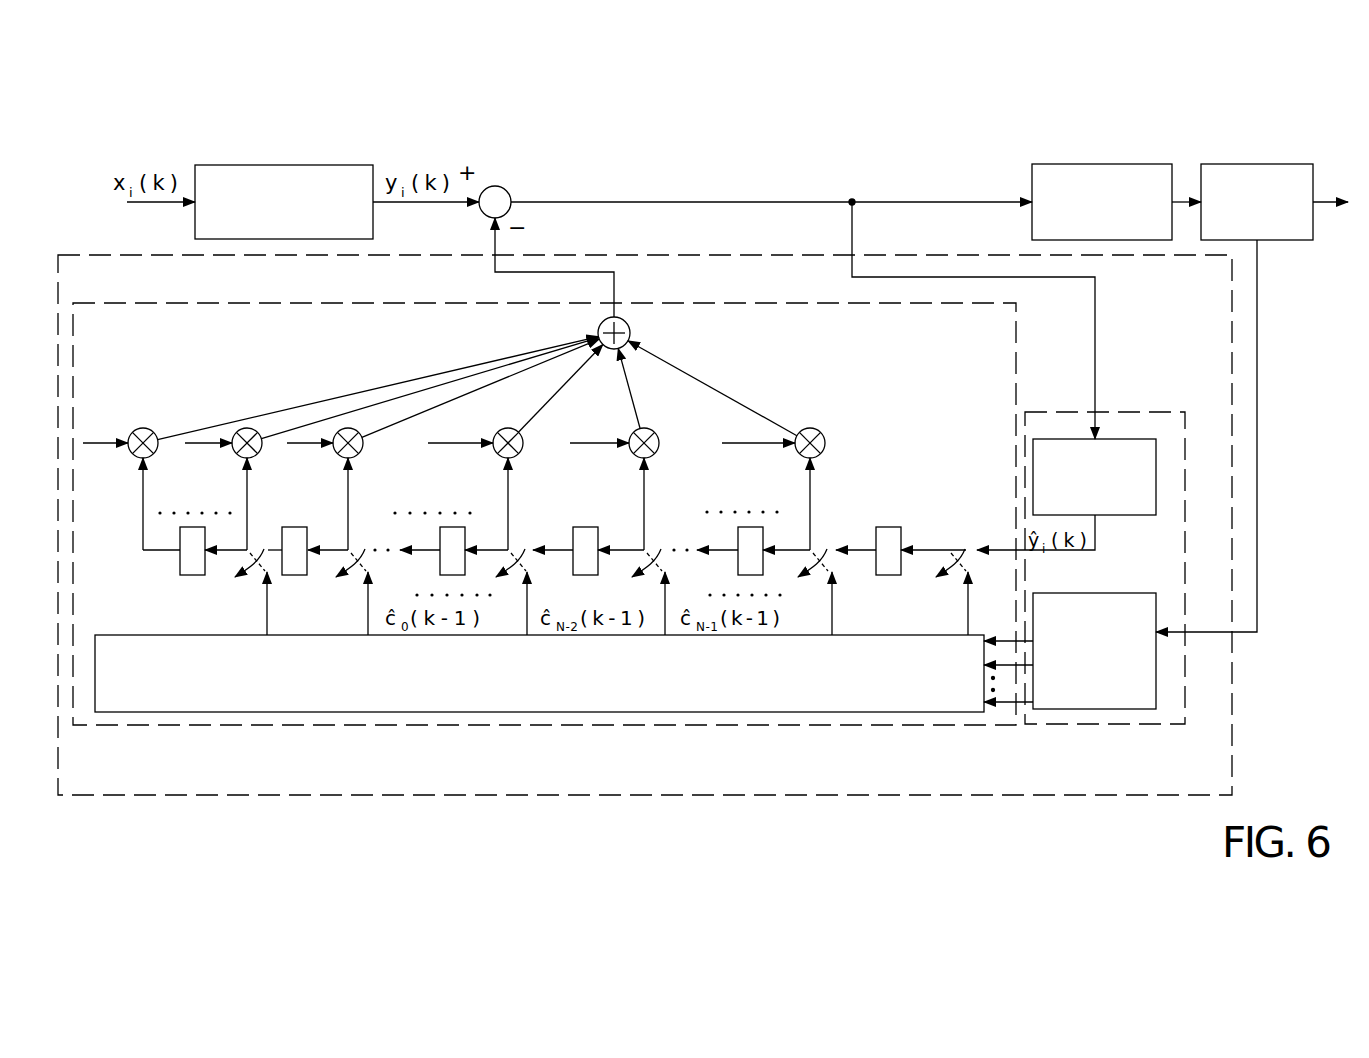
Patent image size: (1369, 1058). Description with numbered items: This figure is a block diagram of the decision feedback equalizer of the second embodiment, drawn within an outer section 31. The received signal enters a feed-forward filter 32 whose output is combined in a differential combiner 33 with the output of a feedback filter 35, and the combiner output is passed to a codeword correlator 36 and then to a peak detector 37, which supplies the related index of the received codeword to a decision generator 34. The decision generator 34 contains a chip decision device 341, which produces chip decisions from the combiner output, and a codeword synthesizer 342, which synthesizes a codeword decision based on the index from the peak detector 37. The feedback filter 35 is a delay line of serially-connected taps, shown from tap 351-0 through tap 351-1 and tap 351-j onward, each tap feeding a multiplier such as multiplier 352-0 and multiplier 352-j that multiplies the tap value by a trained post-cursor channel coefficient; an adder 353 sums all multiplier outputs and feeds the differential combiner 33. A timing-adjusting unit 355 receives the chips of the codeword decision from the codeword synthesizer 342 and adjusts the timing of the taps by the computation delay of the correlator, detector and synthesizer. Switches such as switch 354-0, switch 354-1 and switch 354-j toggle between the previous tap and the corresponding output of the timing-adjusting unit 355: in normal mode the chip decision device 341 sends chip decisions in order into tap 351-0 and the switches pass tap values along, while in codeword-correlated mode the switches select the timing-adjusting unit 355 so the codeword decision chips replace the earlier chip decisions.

The decision feedback equalizer / feedback section 31 is at (1233, 742).
The feed-forward filter 32 is at (246, 164).
The differential combiner 33 is at (498, 186).
The decision generator 34 is at (1122, 727).
The feedback filter 35 is at (1007, 727).
The codeword correlator 36 is at (1143, 163).
The peak detector 37 is at (1270, 163).
The chip decision device 341 is at (1143, 438).
The codeword synthesizer 342 is at (1135, 592).
The adder 353 is at (630, 326).
The timing-adjusting unit 355 is at (539, 673).
The multiplier 352-j is at (500, 430).
The multiplier 352-0 is at (818, 428).
The tap 351-j is at (573, 534).
The tap 351-1 is at (738, 533).
The tap 351-0 is at (888, 527).
The switch 354-j is at (634, 580).
The switch 354-1 is at (800, 580).
The switch 354-0 is at (937, 580).